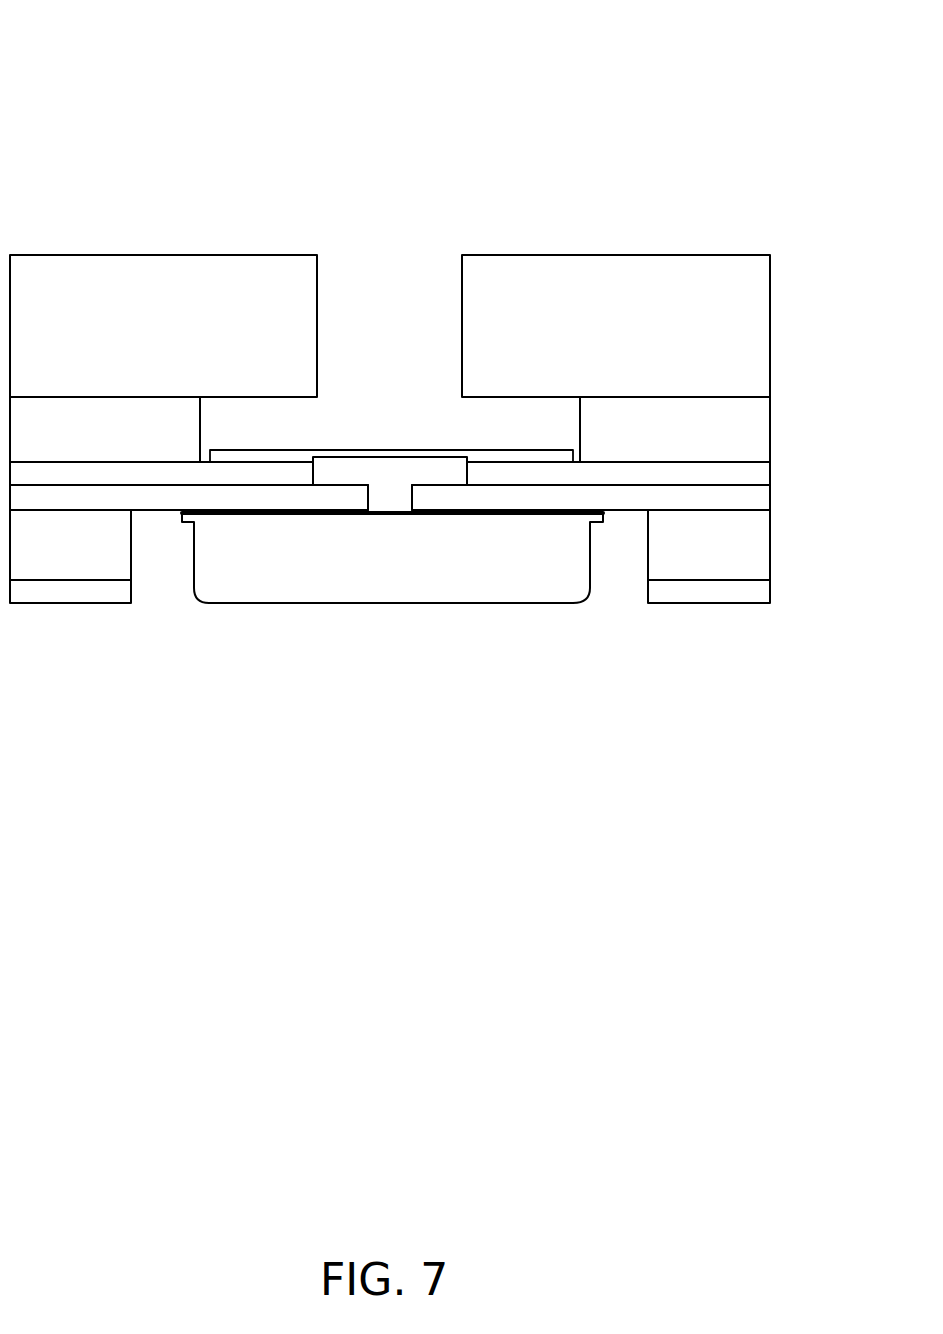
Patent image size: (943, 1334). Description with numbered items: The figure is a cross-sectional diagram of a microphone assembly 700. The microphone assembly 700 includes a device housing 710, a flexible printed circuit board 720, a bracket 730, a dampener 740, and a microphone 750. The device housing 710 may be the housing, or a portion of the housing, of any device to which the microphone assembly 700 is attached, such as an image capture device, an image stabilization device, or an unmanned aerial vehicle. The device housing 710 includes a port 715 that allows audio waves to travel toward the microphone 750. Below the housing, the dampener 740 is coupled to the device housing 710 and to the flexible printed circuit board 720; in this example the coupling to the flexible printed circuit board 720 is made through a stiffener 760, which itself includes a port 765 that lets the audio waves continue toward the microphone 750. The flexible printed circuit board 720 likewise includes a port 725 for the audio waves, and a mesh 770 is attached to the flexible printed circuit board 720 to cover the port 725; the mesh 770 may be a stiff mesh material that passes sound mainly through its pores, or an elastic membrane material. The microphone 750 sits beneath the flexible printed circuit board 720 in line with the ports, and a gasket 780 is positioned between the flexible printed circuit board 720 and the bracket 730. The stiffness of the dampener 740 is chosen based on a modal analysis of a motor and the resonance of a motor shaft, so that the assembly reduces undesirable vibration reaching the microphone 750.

The microphone assembly 700 is at (136, 94).
The port 715 is at (374, 274).
The device housing 710 is at (748, 310).
The dampener 740 is at (740, 420).
The mesh 770 is at (327, 448).
The port 765 is at (385, 473).
The stiffener 760 is at (753, 470).
The flexible printed circuit board 720 is at (757, 498).
The port 725 is at (392, 502).
The microphone 750 is at (473, 580).
The gasket 780 is at (740, 543).
The bracket 730 is at (740, 588).